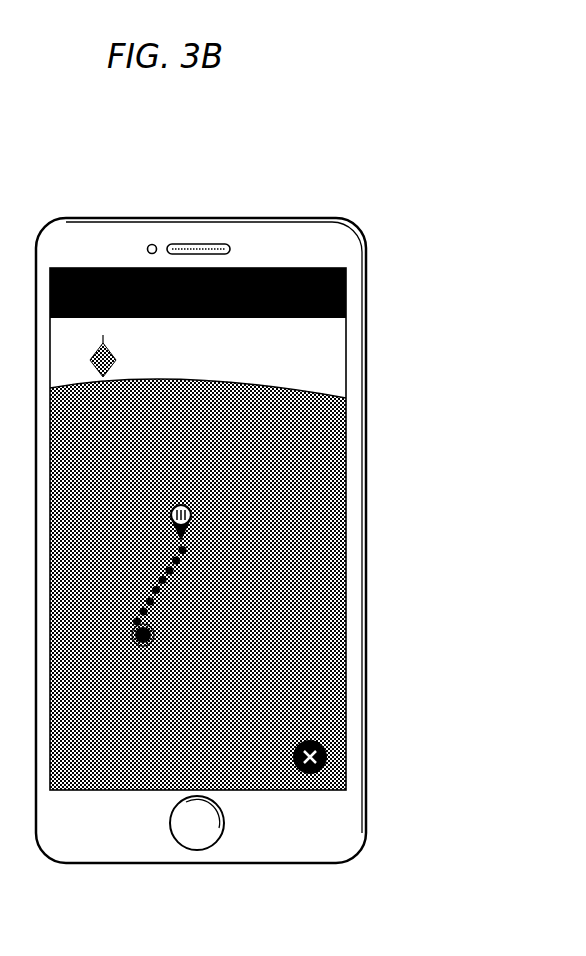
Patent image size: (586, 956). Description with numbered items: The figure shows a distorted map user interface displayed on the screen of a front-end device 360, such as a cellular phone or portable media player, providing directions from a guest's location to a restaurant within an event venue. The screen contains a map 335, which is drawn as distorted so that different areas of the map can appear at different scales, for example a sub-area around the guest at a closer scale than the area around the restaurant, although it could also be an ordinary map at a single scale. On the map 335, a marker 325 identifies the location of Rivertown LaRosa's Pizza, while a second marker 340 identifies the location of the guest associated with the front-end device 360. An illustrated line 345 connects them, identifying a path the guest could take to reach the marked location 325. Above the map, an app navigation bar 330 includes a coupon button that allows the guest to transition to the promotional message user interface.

The front-end device 360 is at (263, 236).
The app navigation bar 330 is at (388, 283).
The map 335 is at (388, 787).
The marker 325 is at (232, 526).
The illustrated line 345 is at (148, 592).
The second marker 340 is at (192, 651).